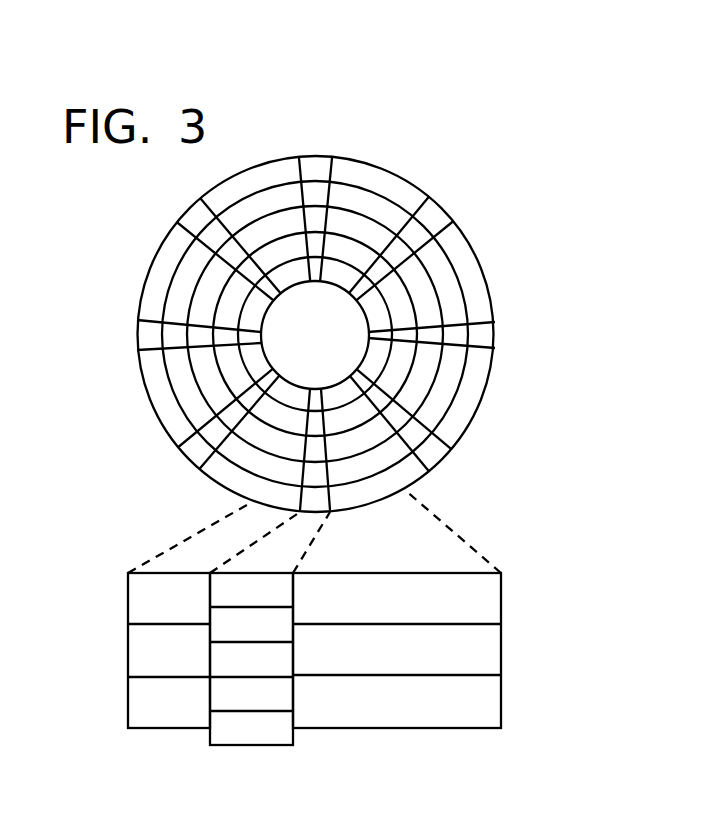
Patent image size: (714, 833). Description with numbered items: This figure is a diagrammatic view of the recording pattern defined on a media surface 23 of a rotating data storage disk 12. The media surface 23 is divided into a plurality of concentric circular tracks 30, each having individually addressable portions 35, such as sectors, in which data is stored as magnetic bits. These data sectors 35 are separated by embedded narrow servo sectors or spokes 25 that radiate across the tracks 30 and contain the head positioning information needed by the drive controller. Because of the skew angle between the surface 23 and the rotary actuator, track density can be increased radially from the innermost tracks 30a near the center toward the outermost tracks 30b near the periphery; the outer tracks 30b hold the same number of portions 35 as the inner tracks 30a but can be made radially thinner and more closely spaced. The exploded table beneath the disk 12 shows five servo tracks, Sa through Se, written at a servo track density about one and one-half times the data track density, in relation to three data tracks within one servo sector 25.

The data storage disk 12 is at (157, 252).
The media surface 23 is at (477, 276).
The servo sector 25 is at (436, 218).
The concentric circular track 30 is at (447, 388).
The innermost track 30a is at (257, 360).
The outermost track 30b is at (160, 408).
The individually addressable portion 35 is at (438, 610).